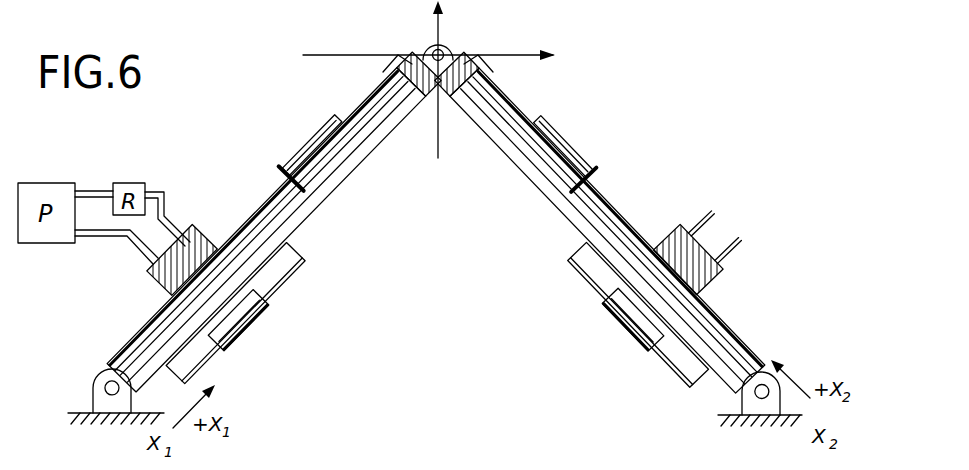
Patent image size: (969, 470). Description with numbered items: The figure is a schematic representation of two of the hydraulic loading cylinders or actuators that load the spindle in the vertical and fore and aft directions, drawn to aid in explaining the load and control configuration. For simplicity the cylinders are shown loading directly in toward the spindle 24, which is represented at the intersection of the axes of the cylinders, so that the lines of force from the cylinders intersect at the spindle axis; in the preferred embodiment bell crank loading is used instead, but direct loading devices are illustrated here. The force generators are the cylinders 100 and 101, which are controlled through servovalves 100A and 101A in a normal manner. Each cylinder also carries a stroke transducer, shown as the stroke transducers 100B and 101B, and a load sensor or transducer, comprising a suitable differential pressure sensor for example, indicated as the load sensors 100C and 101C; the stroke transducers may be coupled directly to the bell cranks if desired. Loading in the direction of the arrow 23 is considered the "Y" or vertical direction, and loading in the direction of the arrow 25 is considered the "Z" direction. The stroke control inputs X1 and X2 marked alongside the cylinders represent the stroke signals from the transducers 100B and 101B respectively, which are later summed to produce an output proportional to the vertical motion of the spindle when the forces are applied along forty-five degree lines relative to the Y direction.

The arrow 23 is at (437, 138).
The spindle 24 is at (445, 50).
The arrow 25 is at (342, 50).
The hydraulic loading cylinder 100 is at (138, 341).
The servovalve 100A is at (168, 294).
The stroke transducer 100B is at (317, 130).
The load sensor 100C is at (250, 327).
The hydraulic loading cylinder 101 is at (712, 338).
The servovalve 101A is at (738, 272).
The stroke transducer 101B is at (558, 128).
The load sensor 101C is at (638, 328).